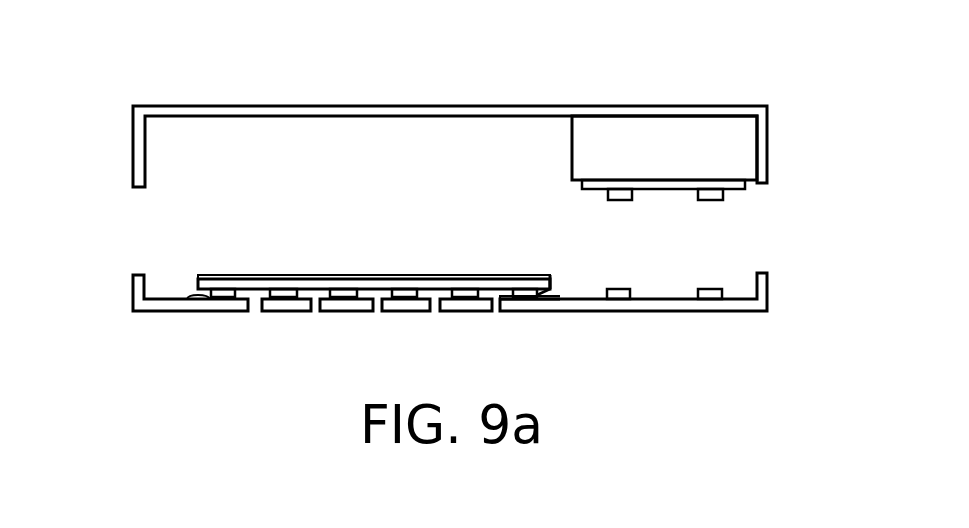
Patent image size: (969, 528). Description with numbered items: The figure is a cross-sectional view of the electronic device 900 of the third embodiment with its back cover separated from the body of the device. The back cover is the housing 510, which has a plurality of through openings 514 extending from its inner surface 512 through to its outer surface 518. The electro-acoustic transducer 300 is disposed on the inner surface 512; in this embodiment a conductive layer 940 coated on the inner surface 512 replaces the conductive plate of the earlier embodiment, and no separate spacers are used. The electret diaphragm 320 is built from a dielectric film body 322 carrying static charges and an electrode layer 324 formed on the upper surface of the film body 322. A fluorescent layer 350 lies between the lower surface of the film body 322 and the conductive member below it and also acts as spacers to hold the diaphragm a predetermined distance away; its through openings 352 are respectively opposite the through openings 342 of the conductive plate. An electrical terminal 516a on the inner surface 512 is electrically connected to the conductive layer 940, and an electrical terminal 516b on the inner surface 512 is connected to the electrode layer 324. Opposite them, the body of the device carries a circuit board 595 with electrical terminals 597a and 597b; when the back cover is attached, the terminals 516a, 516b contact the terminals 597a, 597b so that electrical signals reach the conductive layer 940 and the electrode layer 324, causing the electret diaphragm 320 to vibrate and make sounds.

The electronic device 900 is at (172, 78).
The electro-acoustic transducer 300 is at (327, 203).
The electret diaphragm 320 is at (193, 273).
The through openings 342 is at (257, 275).
The electrode layer 324 is at (553, 275).
The film body 322 is at (553, 290).
The fluorescent layer 350 is at (552, 296).
The through openings 352 is at (497, 296).
The housing 510 is at (133, 282).
The inner surface 512 is at (664, 297).
The through openings 514 is at (256, 298).
The electrical terminal 516a is at (620, 299).
The electrical terminal 516b is at (713, 299).
The outer surface 518 is at (212, 311).
The conductive layer 940 is at (188, 311).
The circuit board 595 is at (690, 149).
The electrical terminal 597a is at (620, 189).
The electrical terminal 597b is at (713, 189).